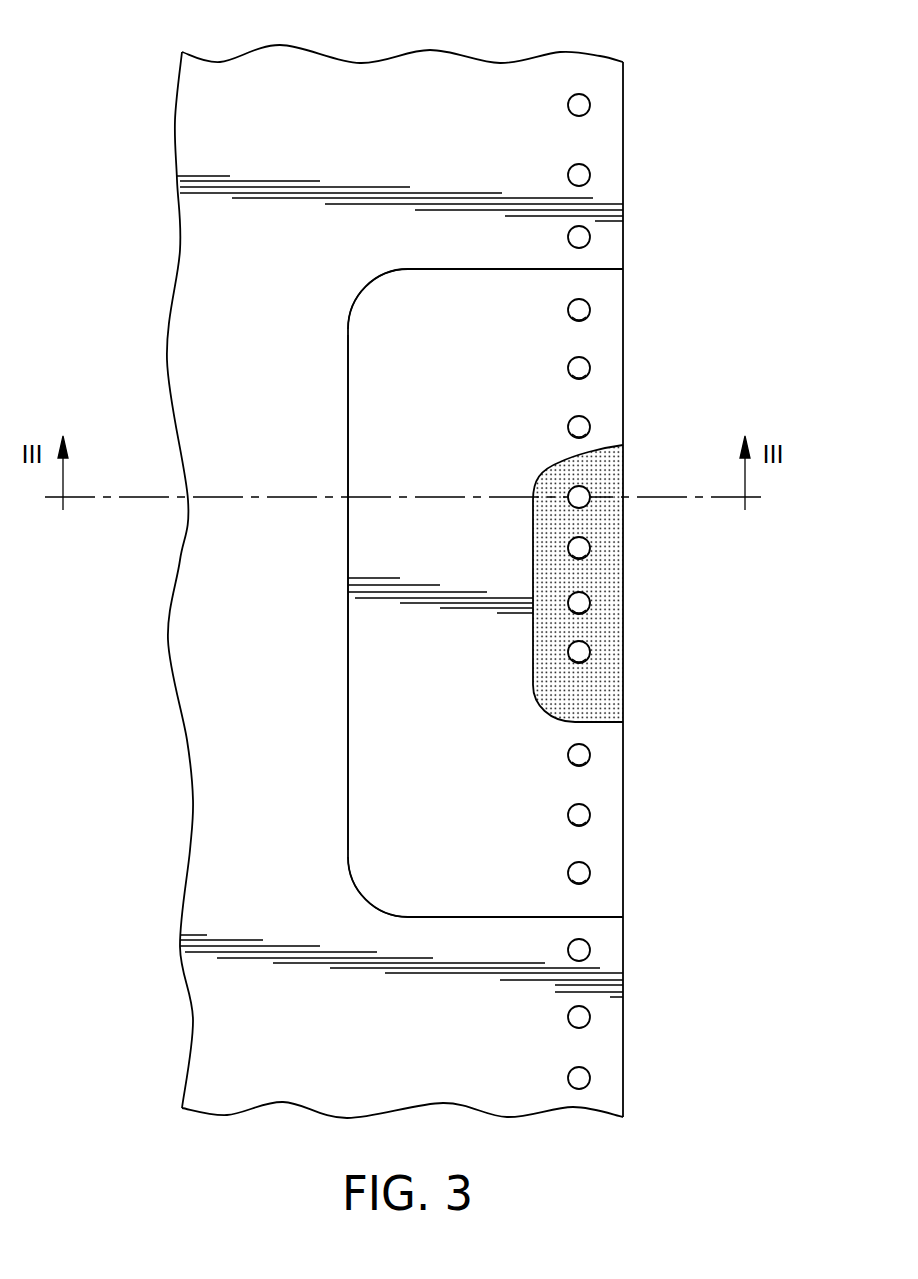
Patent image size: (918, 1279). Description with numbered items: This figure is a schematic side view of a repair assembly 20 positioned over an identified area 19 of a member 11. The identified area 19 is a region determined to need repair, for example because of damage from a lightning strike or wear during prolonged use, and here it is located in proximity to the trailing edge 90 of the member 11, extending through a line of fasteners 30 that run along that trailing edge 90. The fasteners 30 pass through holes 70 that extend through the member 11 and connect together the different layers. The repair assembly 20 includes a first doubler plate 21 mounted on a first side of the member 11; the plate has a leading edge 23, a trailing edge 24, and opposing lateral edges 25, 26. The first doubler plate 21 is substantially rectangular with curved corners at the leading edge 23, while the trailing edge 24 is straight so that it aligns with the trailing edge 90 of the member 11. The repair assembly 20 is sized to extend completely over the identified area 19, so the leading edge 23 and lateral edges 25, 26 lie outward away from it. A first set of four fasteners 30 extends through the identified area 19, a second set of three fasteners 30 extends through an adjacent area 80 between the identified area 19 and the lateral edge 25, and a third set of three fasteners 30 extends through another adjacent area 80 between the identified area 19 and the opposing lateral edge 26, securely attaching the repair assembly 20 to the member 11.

The member 11 is at (230, 855).
The identified area 19 is at (600, 572).
The repair assembly 20 is at (497, 300).
The first doubler plate 21 is at (450, 890).
The leading edge 23 is at (348, 733).
The trailing edge 24 is at (623, 340).
The lateral edge 25 is at (408, 917).
The lateral edge 26 is at (408, 269).
The fasteners 30 is at (590, 105).
The holes 70 is at (590, 310).
The adjacent area 80 is at (456, 305).
The trailing edge 90 is at (623, 1045).